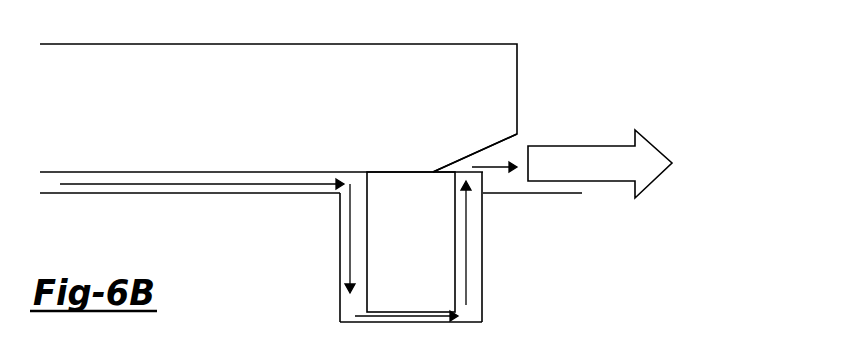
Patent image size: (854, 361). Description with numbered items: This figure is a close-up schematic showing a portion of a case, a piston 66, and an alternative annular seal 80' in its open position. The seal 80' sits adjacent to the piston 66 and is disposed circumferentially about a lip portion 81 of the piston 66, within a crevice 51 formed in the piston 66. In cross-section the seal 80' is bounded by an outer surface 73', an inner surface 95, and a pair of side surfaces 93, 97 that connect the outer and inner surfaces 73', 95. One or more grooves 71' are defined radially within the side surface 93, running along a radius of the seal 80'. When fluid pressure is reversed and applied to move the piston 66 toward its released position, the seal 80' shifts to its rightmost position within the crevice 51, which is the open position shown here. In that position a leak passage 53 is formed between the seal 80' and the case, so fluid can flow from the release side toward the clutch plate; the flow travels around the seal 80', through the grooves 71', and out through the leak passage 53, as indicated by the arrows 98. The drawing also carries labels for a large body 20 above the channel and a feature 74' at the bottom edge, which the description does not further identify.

The body 20 is at (395, 60).
The outer surface 73' is at (451, 131).
The leak passage 53 is at (507, 145).
The annular seal 80' is at (411, 242).
The piston 66 is at (306, 233).
The lip portion 81 is at (442, 329).
The crevice 51 is at (474, 302).
The arrows 98 is at (432, 348).
The side surface 97 is at (367, 302).
The grooves 71' is at (517, 244).
The side surface 93 is at (455, 272).
The inner surface 95 is at (393, 322).
The lower body 74' is at (279, 355).